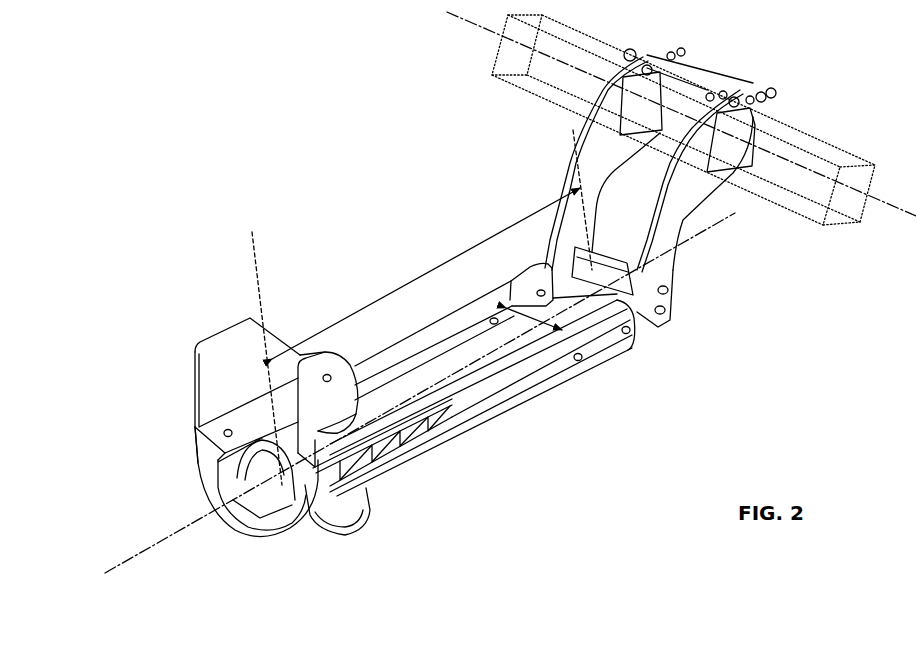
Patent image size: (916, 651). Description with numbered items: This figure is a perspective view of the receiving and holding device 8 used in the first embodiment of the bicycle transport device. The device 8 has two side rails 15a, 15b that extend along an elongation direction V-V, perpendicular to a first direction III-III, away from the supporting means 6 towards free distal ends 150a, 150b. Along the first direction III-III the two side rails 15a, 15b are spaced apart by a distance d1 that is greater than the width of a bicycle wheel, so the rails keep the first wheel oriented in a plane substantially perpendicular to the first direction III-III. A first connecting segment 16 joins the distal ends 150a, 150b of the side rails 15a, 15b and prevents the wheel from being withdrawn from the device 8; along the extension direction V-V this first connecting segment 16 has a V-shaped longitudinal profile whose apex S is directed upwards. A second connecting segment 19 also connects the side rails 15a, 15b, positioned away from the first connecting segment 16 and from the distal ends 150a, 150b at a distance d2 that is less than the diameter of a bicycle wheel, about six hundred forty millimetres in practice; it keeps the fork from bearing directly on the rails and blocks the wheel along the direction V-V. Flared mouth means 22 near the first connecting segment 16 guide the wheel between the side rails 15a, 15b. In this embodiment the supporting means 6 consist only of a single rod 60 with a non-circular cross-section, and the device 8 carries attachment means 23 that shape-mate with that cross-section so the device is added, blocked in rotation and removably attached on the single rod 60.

The supporting means 6 is at (555, 100).
The receiving and holding device 8 is at (648, 340).
The side rail 15a is at (529, 385).
The side rail 15b is at (442, 330).
The first connecting segment 16 is at (207, 507).
The second connecting segment 19 is at (605, 270).
The flared mouth means 22 is at (180, 405).
The attachment means 23 is at (750, 77).
The single rod 60 is at (820, 150).
The free distal end 150a is at (327, 490).
The free distal end 150b is at (326, 378).
The apex S is at (250, 535).
The distance d1 is at (508, 306).
The distance d2 is at (422, 307).
The first direction III- III is at (674, 114).
The extension direction V- V is at (420, 401).